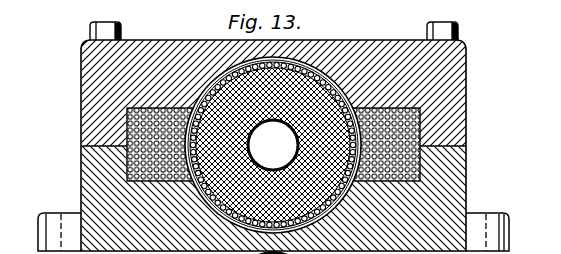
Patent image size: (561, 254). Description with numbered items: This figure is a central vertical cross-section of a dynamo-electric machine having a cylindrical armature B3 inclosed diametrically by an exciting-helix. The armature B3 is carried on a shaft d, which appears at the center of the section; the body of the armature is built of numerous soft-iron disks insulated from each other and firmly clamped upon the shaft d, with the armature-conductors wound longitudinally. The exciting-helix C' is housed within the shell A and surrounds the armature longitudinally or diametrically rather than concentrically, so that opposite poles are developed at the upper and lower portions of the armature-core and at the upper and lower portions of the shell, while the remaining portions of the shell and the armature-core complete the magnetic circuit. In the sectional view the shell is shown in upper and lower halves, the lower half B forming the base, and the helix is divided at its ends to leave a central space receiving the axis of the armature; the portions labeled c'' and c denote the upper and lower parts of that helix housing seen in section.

The shell A is at (273, 79).
The lower half of bearing housing (base) B is at (273, 200).
The exciting-helix C' is at (307, 144).
The upper ball bearing chamber c'' is at (273, 95).
The lower ball bearing chamber c is at (273, 192).
The shaft d is at (273, 145).
The armature B3 is at (273, 145).